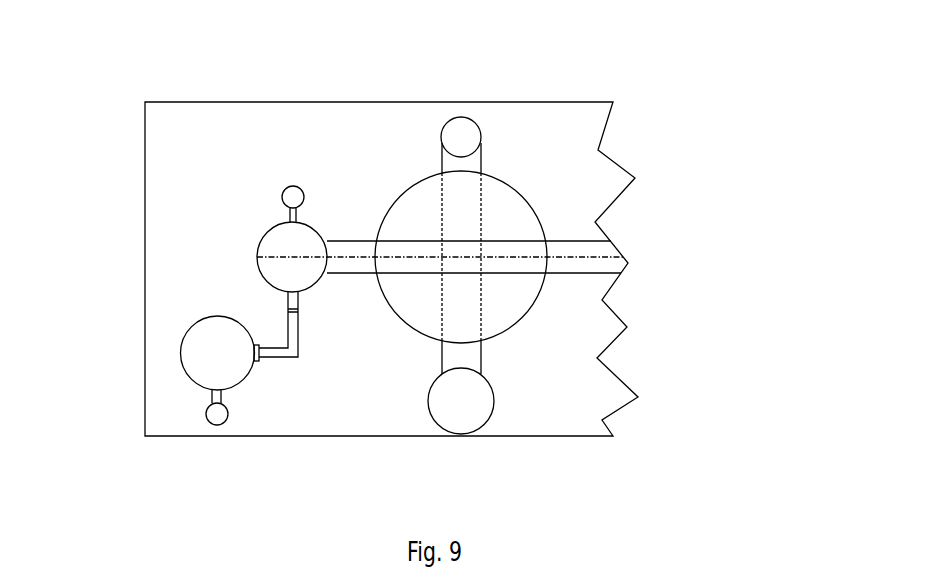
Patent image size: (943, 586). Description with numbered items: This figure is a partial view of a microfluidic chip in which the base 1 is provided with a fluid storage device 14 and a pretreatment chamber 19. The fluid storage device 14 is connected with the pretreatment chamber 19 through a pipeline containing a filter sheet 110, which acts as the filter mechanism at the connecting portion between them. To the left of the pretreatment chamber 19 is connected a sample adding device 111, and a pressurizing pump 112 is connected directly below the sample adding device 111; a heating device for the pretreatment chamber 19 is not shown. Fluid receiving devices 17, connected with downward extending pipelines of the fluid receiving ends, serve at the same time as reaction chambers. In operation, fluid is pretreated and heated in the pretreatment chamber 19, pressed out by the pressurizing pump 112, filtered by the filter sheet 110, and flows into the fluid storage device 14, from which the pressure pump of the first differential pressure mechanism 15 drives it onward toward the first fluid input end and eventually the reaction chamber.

The base 1 is at (541, 168).
The fluid storage device 14 is at (273, 246).
The first differential pressure mechanism 15 is at (387, 142).
The fluid receiving device 17 is at (465, 420).
The pretreatment chamber 19 is at (249, 381).
The filter sheet 110 is at (302, 332).
The sample adding device 111 is at (208, 339).
The pressurizing pump 112 is at (198, 423).